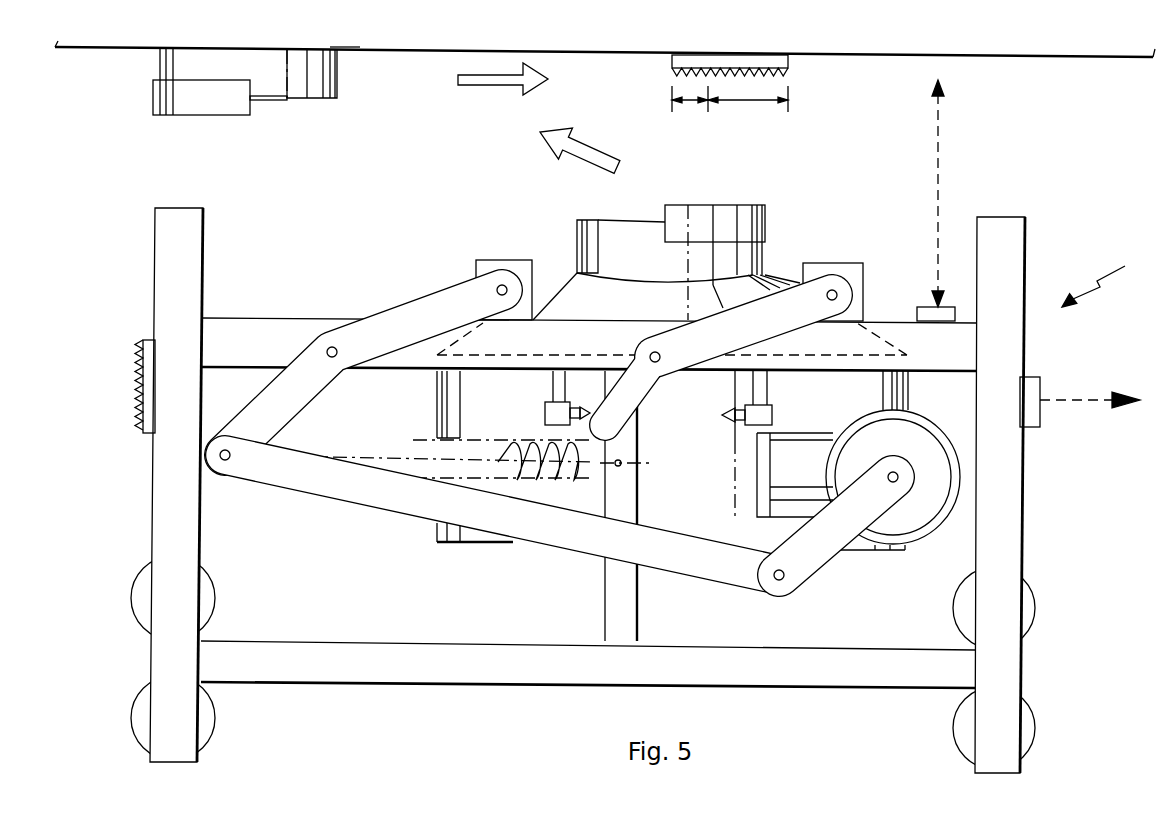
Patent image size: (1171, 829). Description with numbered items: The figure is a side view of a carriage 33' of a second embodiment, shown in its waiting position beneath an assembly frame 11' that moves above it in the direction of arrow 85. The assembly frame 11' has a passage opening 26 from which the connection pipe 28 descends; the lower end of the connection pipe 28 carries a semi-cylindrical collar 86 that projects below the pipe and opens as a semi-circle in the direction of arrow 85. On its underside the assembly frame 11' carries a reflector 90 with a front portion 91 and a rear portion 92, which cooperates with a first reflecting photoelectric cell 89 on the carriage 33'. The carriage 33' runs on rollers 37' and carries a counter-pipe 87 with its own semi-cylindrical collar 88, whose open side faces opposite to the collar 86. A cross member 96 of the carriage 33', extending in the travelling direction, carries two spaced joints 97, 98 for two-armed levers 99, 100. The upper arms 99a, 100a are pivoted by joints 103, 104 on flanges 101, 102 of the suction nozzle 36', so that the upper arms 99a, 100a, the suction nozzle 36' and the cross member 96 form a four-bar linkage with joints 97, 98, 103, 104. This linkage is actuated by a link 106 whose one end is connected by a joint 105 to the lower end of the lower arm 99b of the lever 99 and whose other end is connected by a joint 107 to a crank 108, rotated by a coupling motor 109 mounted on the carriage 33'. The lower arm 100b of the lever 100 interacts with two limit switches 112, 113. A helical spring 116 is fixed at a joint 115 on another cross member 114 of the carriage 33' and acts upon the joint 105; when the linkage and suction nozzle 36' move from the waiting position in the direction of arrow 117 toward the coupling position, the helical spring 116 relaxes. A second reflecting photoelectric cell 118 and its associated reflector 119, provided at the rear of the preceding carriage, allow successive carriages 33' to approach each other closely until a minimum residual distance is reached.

The assembly frame 11' is at (605, 72).
The passage opening 26 is at (345, 40).
The connection pipe 28 is at (273, 92).
The semi-cylindrical collar 86 is at (220, 102).
The arrow 85 is at (492, 77).
The arrow 117 is at (597, 145).
The reflector 90 is at (788, 63).
The front portion 91 is at (748, 103).
The rear portion 92 is at (690, 103).
The counter-pipe 87 is at (595, 242).
The semi-cylindrical collar 88 is at (765, 212).
The first reflecting photoelectric cell 89 is at (947, 313).
The carriage 33' is at (1113, 276).
The rollers 37' is at (594, 662).
The cross member 96 is at (267, 335).
The reflector 119 is at (146, 435).
The second reflecting photoelectric cell 118 is at (1030, 410).
The suction nozzle 36' is at (649, 432).
The cross member 114 is at (607, 598).
The flange 101 is at (487, 265).
The flange 102 is at (857, 276).
The limit switch 112 is at (553, 410).
The limit switch 113 is at (758, 417).
The joint 115 is at (622, 463).
The helical spring 116 is at (545, 477).
The coupling motor 109 is at (943, 478).
The two-armed lever 99 is at (388, 282).
The upper arm 99a is at (438, 310).
The lower arm 99b is at (293, 400).
The joint 97 is at (326, 345).
The joint 103 is at (504, 286).
The two-armed lever 100 is at (797, 343).
The upper arm 100a is at (802, 297).
The lower arm 100b is at (627, 393).
The joint 104 is at (833, 293).
The joint 98 is at (667, 357).
The link 106 is at (372, 495).
The crank 108 is at (820, 550).
The joint 105 is at (223, 460).
The joint 107 is at (783, 578).